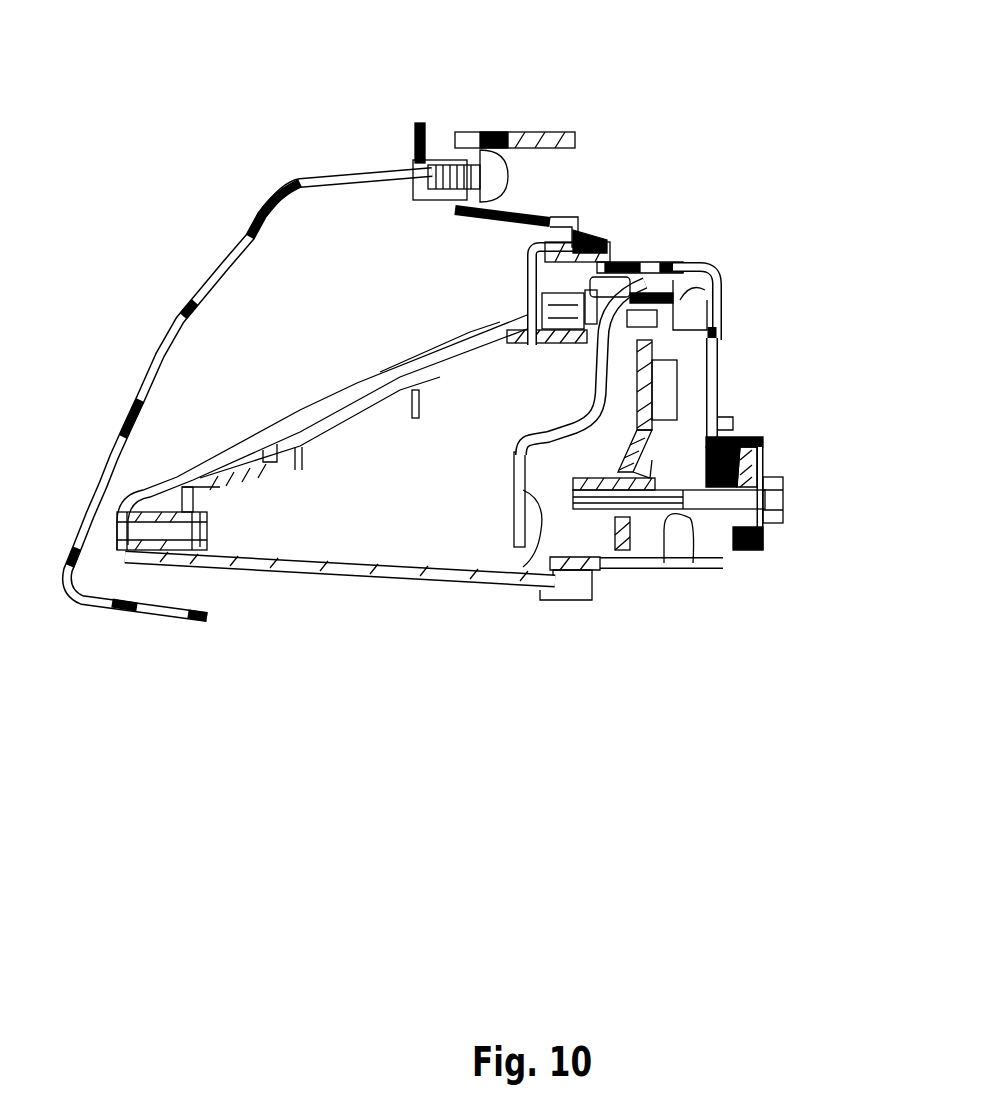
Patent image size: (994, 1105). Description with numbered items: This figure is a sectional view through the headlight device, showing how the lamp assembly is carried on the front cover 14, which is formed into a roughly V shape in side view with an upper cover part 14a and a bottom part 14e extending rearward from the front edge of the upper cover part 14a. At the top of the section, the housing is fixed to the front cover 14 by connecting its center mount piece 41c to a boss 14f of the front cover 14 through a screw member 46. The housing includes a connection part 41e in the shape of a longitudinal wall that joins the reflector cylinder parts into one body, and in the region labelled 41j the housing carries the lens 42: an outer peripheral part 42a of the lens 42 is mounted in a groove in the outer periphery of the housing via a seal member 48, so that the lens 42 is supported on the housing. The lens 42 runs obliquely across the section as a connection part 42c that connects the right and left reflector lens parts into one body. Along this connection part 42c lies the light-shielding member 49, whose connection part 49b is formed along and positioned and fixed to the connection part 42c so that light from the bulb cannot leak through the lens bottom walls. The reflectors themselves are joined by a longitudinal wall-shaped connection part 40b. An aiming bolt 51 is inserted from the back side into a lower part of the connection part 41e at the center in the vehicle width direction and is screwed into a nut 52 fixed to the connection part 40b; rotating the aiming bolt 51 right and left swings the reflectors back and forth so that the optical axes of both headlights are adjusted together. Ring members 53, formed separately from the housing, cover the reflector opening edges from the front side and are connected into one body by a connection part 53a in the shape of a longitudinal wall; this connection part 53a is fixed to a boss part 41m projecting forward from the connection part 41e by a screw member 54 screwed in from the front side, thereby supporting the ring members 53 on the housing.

The front cover 14 is at (288, 176).
The upper cover part 14a is at (180, 317).
The bottom part 14e is at (150, 616).
The boss 14f is at (437, 140).
The center mount piece 41c is at (468, 132).
The screw member 46 is at (508, 176).
The seal member 48 is at (597, 212).
The upper wall of housing 41j is at (600, 247).
The boss part 41m is at (677, 267).
The connection part 40b is at (707, 333).
The connection part 41e is at (721, 383).
The outer peripheral part 42a is at (538, 262).
The lens 42 is at (357, 380).
The connection part 42c is at (306, 413).
The screw member 54 is at (603, 338).
The light-shielding member 49 is at (432, 392).
The connection part 49b is at (343, 428).
The ring members 53 is at (505, 518).
The connection part 53a is at (522, 568).
The nut 52 is at (667, 508).
The aiming bolt 51 is at (783, 505).